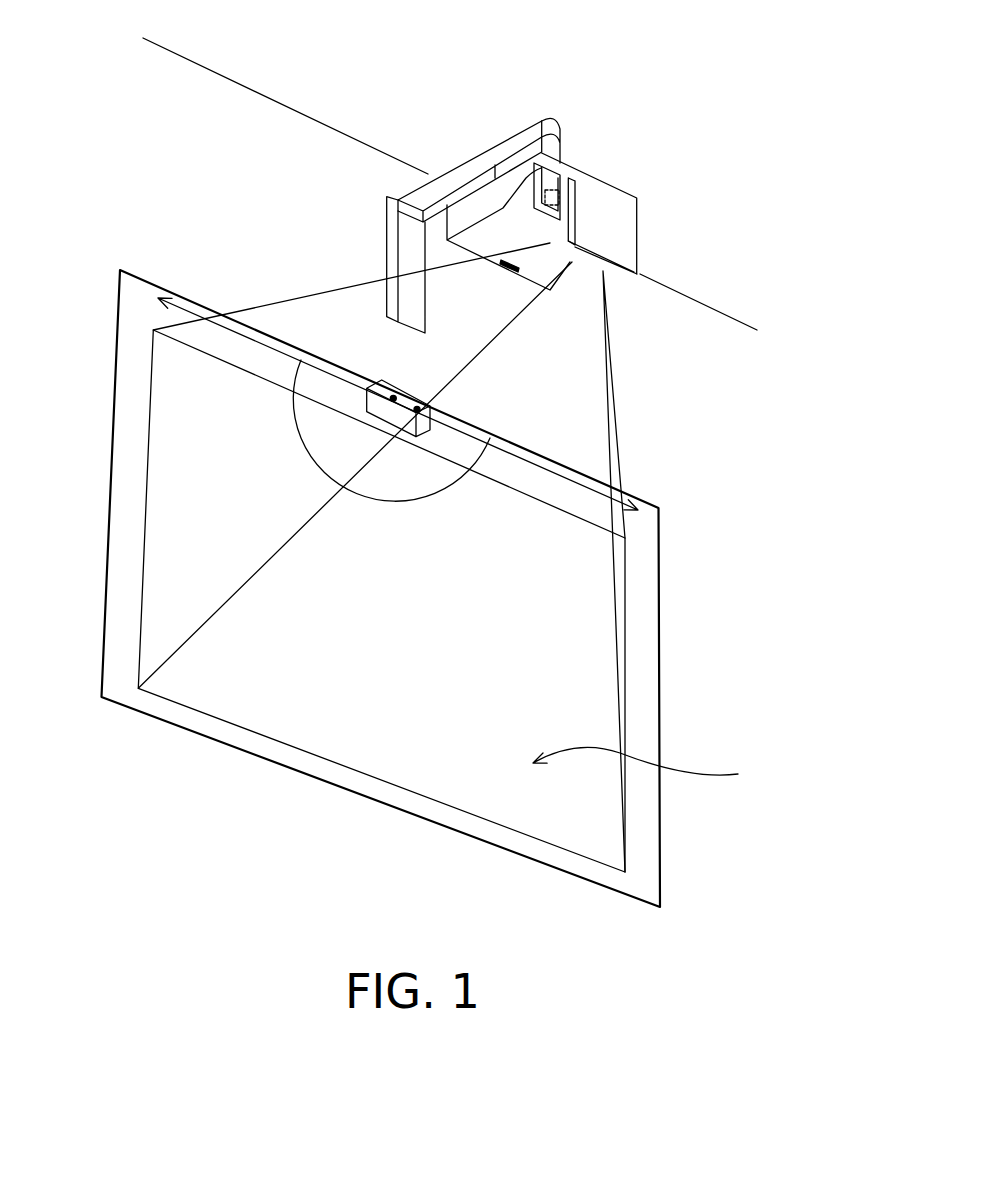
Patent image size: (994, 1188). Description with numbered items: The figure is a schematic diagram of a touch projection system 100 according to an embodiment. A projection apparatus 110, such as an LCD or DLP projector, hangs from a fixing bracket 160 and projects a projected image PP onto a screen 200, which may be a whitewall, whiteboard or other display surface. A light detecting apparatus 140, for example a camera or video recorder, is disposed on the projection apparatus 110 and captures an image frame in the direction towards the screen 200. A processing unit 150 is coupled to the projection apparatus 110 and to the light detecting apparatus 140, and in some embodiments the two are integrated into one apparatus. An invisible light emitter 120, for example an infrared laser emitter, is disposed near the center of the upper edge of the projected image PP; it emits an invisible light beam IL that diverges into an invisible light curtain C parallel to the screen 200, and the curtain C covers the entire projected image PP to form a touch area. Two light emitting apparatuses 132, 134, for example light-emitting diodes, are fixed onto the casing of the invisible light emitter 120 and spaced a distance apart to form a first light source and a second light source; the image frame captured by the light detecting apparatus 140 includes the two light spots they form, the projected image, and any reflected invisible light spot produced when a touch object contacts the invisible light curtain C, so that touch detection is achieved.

The touch projection system 100 is at (442, 496).
The projection apparatus 110 is at (622, 229).
The invisible light emitter 120 is at (440, 372).
The light emitting apparatus 132 is at (393, 397).
The light emitting apparatus 134 is at (417, 406).
The light detecting apparatus 140 is at (555, 178).
The processing unit 150 is at (545, 193).
The fixing bracket 160 is at (452, 177).
The screen 200 is at (652, 690).
The invisible light curtain C is at (306, 431).
The invisible light beam IL is at (580, 484).
The projected image PP is at (653, 770).